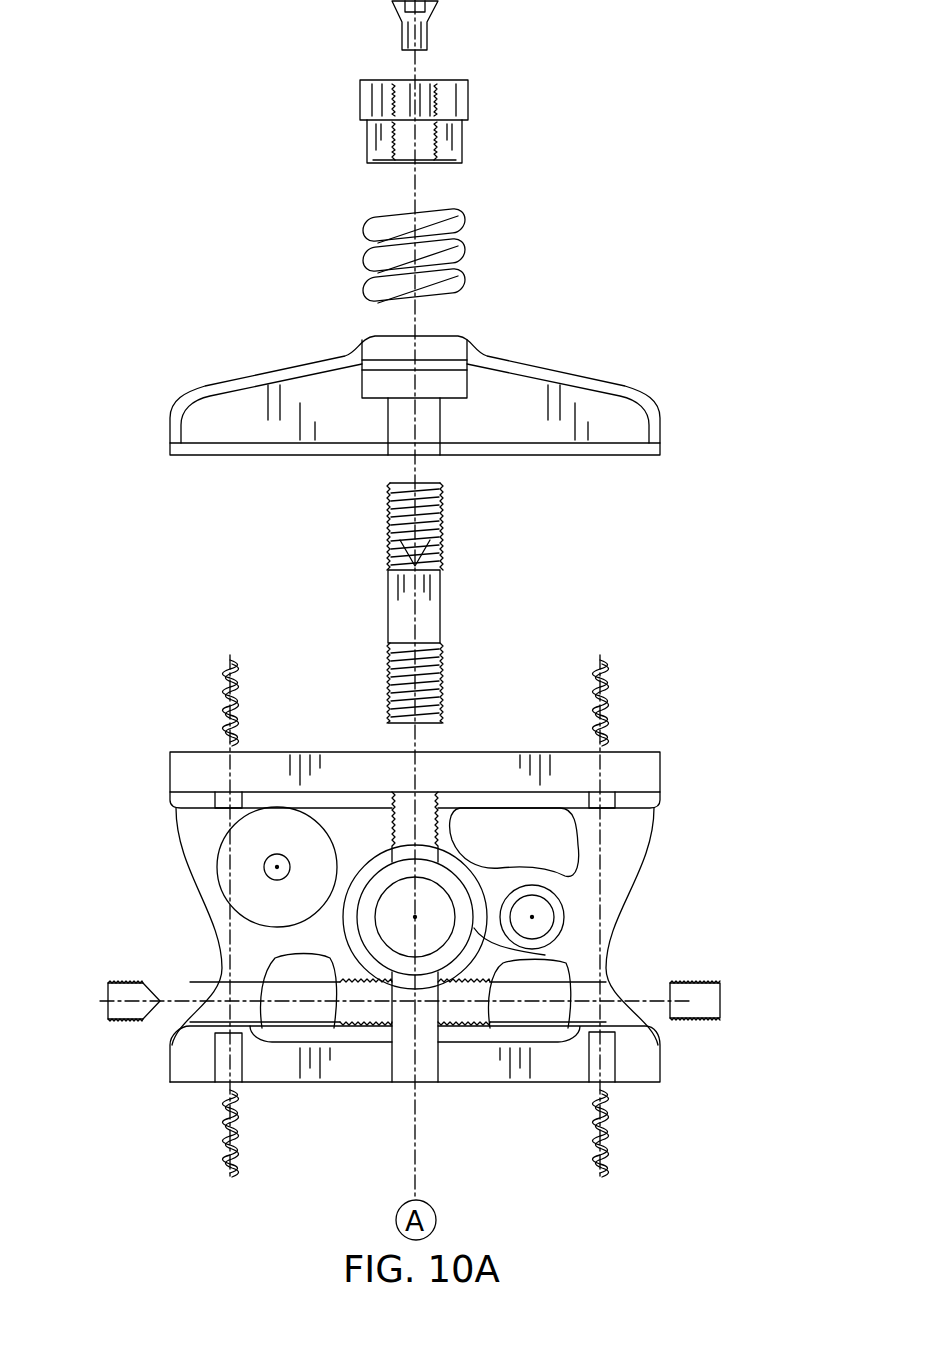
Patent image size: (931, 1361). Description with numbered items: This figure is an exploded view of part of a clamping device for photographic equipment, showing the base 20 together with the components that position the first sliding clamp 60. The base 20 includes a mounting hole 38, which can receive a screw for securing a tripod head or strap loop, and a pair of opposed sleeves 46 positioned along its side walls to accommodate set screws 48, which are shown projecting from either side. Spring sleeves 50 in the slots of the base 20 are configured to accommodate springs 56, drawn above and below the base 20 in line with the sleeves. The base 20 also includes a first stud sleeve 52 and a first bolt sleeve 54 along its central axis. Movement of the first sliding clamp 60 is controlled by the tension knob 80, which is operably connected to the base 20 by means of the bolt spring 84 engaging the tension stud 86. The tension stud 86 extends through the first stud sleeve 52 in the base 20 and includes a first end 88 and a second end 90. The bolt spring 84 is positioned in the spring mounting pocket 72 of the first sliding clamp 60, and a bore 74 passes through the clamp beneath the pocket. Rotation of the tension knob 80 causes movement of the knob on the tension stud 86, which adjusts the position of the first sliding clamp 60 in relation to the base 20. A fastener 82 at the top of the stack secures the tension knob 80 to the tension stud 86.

The fastener 82 is at (438, 22).
The tension knob 80 is at (468, 103).
The bolt spring 84 is at (462, 268).
The first sliding clamp 60 is at (521, 436).
The spring mounting pocket 72 is at (450, 398).
The stem of cap 74 is at (407, 440).
The second end 90 is at (441, 488).
The tension stud 86 is at (441, 626).
The first end 88 is at (442, 720).
The base 20 is at (592, 889).
The first stud sleeve 52 is at (405, 800).
The first bolt sleeve 54 is at (407, 1068).
The opposed sleeves 46 is at (352, 1012).
The mounting hole 38 is at (538, 944).
The spring sleeves 50 is at (228, 808).
The set screws 48 is at (108, 1003).
The springs 56 is at (220, 672).